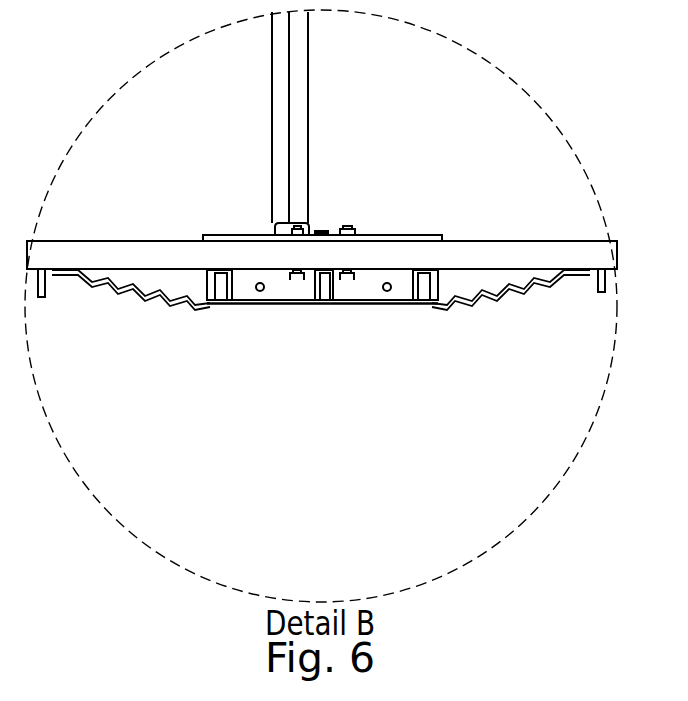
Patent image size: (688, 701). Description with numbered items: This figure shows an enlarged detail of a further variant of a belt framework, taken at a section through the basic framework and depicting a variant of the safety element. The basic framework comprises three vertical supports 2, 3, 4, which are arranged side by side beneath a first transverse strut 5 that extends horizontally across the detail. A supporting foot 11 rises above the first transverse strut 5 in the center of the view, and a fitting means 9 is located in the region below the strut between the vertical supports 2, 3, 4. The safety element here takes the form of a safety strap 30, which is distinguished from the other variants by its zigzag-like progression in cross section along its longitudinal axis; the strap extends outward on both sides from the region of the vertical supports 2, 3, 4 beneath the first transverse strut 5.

The vertical support 2 is at (229, 289).
The vertical support 3 is at (337, 290).
The vertical support 4 is at (414, 288).
The first transverse strut 5 is at (582, 260).
The fitting means 9 is at (372, 294).
The supporting foot 11 is at (300, 116).
The safety strap 30 is at (401, 306).